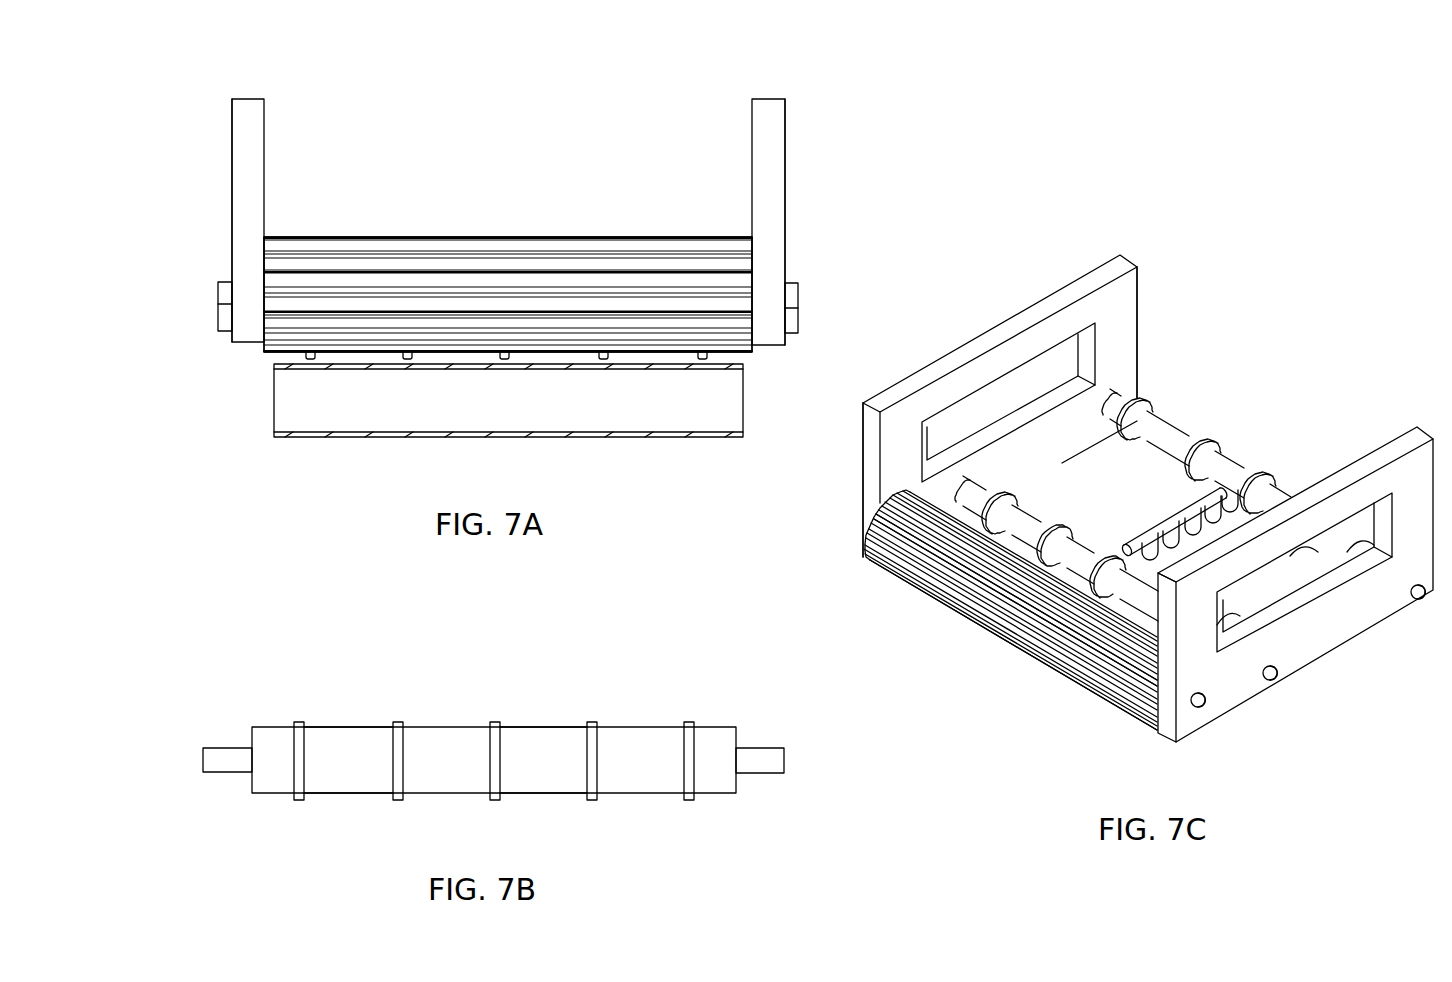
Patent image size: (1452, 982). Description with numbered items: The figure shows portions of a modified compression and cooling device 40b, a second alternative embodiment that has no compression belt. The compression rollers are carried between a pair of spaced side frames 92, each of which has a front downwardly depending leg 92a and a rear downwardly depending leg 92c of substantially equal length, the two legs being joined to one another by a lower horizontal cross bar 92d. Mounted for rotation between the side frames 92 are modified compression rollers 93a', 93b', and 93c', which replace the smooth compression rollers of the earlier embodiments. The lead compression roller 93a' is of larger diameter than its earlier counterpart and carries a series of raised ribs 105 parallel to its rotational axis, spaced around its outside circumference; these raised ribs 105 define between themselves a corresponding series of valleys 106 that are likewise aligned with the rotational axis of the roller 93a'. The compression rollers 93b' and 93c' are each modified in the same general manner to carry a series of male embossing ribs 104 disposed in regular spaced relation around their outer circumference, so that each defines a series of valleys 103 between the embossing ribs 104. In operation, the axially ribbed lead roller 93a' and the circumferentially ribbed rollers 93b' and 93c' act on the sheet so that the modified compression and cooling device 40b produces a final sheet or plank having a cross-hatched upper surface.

In FIG. 7A, the modified compression and cooling device 40b is at (692, 98).
In FIG. 7C, the modified compression and cooling device 40b is at (1318, 322).
In FIG. 7A, the side frame 92 is at (257, 99).
In FIG. 7C, the side frame 92 is at (1033, 312).
In FIG. 7A, the front downwardly depending leg 92a is at (234, 205).
In FIG. 7C, the front downwardly depending leg 92a is at (877, 473).
In FIG. 7C, the rear downwardly depending leg 92c is at (1120, 343).
In FIG. 7C, the lower horizontal cross bar 92d is at (988, 437).
In FIG. 7C, the lead compression roller 93a' is at (985, 645).
In FIG. 7B, the compression roller 93b' is at (493, 705).
In FIG. 7C, the compression roller 93b' is at (1056, 519).
In FIG. 7C, the compression roller 93c' is at (1225, 430).
In FIG. 7B, the valleys 103 is at (357, 720).
In FIG. 7B, the male embossing ribs 104 is at (302, 722).
In FIG. 7C, the male embossing ribs 104 is at (1207, 435).
In FIG. 7A, the raised ribs 105 is at (350, 280).
In FIG. 7C, the raised ribs 105 is at (868, 538).
In FIG. 7C, the valleys 106 is at (1060, 623).